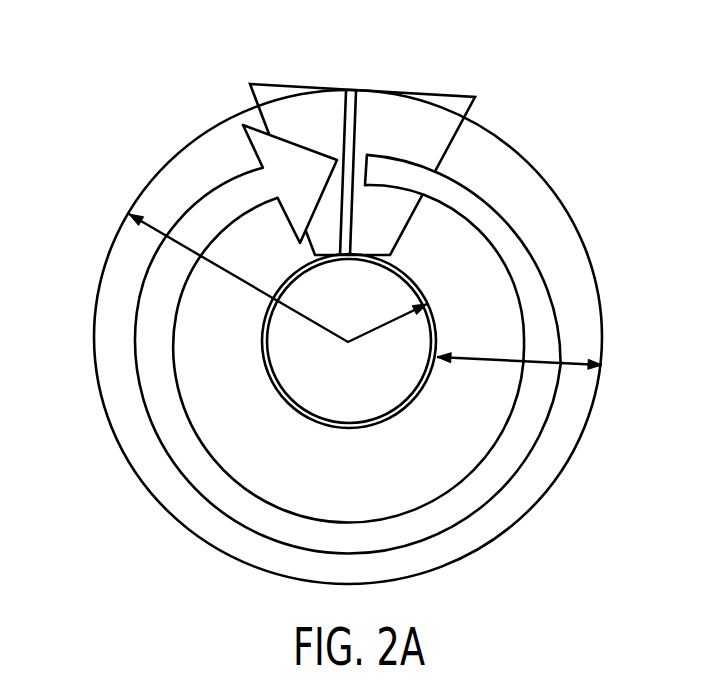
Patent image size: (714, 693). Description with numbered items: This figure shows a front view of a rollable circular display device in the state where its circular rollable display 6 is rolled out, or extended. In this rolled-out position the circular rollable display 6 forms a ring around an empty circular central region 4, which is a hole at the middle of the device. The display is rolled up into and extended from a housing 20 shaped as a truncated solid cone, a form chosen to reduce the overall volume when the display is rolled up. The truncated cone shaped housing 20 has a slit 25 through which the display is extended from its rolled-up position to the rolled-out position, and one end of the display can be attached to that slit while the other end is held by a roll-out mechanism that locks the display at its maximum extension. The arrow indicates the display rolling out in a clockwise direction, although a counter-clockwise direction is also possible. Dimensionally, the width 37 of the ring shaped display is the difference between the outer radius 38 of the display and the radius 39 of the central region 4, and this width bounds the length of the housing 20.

The empty circular central region 4 is at (320, 383).
The circular rollable display 6 is at (488, 525).
The truncated cone shaped housing 20 is at (470, 109).
The slit 25 is at (358, 116).
The width of the ring shaped display 37 is at (542, 362).
The outer radius of the display 38 is at (153, 232).
The radius of the central region 39 is at (380, 330).